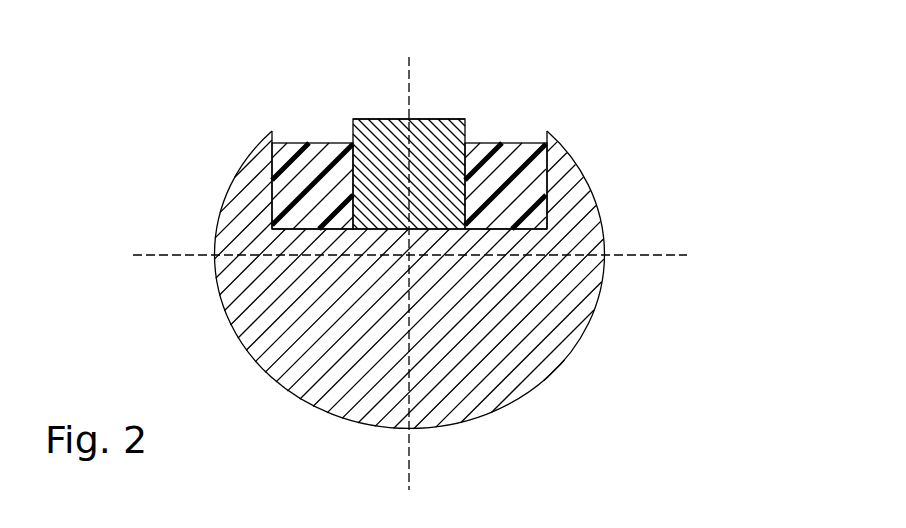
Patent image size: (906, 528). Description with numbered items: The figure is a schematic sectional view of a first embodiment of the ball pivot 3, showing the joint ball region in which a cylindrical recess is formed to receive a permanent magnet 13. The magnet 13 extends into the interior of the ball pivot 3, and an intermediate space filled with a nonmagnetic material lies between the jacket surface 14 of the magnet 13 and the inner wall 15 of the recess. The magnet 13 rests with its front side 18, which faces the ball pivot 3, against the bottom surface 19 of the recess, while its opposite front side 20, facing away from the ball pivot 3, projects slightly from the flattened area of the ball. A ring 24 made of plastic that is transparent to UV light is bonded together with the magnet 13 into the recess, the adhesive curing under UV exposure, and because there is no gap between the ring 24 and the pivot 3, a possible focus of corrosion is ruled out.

The ball pivot 3 is at (505, 365).
The permanent magnet 13 is at (437, 162).
The jacket surface 14 is at (352, 179).
The inner wall 15 is at (547, 197).
The front side 18 is at (437, 232).
The bottom surface 19 is at (273, 228).
The front side 20 is at (368, 118).
The ring 24 is at (523, 125).